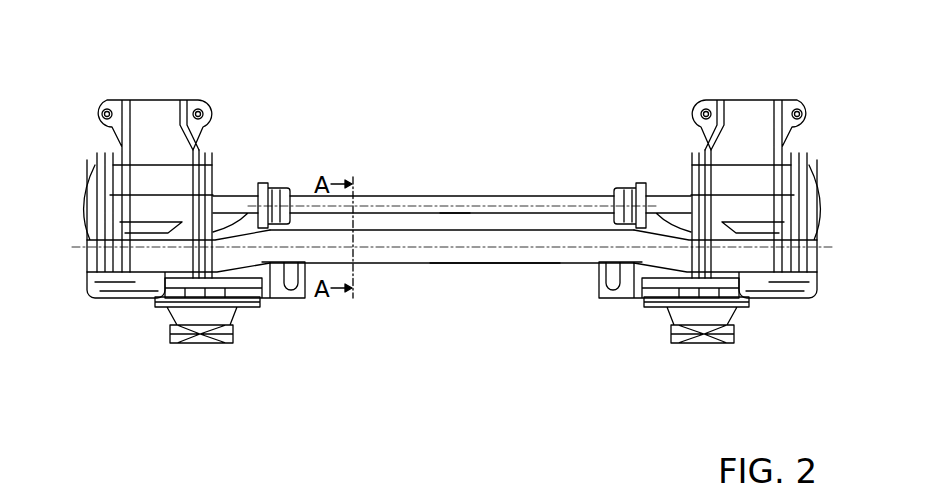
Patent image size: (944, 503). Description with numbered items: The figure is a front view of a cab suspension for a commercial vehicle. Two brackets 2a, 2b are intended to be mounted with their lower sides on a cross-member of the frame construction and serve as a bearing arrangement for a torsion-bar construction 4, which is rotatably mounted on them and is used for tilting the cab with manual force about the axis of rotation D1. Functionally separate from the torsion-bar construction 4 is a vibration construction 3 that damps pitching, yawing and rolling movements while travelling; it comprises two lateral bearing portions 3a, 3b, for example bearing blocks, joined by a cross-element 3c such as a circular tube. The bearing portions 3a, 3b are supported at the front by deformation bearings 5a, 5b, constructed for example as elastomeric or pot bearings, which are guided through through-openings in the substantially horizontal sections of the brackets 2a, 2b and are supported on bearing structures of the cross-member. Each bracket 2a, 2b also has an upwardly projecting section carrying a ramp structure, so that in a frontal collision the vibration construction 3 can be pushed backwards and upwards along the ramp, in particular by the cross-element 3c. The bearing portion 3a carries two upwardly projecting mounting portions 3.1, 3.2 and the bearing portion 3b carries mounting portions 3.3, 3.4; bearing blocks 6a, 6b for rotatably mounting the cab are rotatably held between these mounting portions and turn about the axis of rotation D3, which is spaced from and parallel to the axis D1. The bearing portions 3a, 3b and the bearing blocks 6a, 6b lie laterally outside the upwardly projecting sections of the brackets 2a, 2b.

The bearing portion 3a is at (84, 174).
The bearing portion 3b is at (831, 236).
The mounting portion 3.1 is at (98, 217).
The mounting portion 3.2 is at (213, 176).
The mounting portion 3.3 is at (693, 176).
The mounting portion 3.4 is at (808, 178).
The bearing block 6a is at (165, 112).
The bearing block 6b is at (755, 112).
The axis of rotation D3 is at (150, 195).
The bracket 2a is at (292, 183).
The bracket 2b is at (614, 183).
The deformation bearing 5a is at (207, 325).
The deformation bearing 5b is at (700, 325).
The vibration construction 3 is at (435, 263).
The cross-element 3c is at (487, 263).
The torsion-bar construction 4 is at (402, 197).
The axis of rotation D1 is at (451, 208).